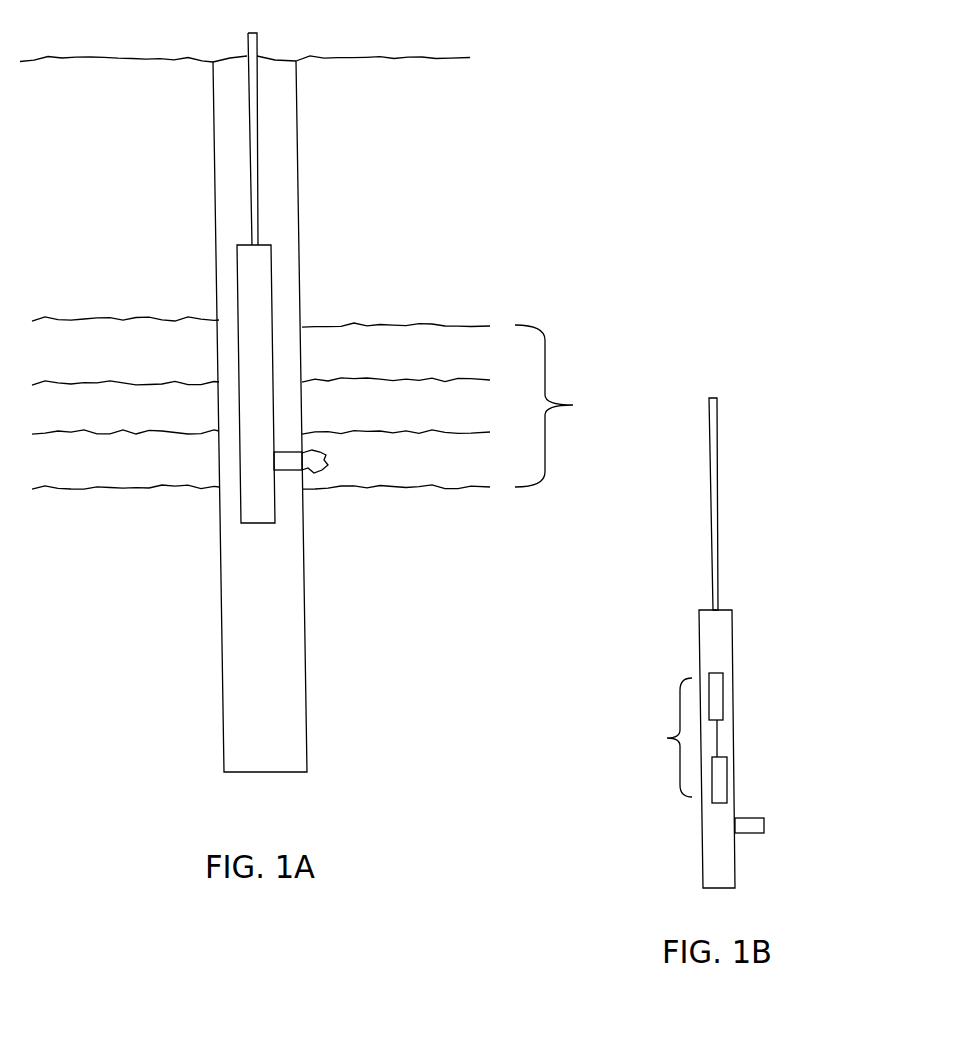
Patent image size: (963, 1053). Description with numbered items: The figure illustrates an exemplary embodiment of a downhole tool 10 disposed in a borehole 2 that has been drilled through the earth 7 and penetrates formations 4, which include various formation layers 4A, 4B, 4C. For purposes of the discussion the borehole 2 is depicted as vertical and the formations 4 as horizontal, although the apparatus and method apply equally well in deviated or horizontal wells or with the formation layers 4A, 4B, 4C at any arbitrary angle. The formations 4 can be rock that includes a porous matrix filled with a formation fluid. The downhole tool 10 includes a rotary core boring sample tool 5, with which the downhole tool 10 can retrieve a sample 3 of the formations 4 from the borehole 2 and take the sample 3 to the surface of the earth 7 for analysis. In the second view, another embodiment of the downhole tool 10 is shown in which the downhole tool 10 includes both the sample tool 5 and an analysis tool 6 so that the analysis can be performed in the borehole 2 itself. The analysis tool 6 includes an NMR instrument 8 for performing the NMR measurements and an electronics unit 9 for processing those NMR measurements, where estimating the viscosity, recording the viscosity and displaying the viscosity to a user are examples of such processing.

In FIG. 1A, the borehole 2 is at (230, 90).
In FIG. 1A, the earth 7 is at (434, 167).
In FIG. 1A, the formations 4 is at (562, 406).
In FIG. 1A, the formation layer 4A is at (446, 367).
In FIG. 1A, the formation layer 4B is at (446, 415).
In FIG. 1A, the formation layer 4C is at (451, 468).
In FIG. 1A, the sample 3 is at (316, 462).
In FIG. 1A, the rotary core boring sample tool 5 is at (285, 462).
In FIG. 1B, the rotary core boring sample tool 5 is at (757, 828).
In FIG. 1A, the downhole tool 10 is at (226, 515).
In FIG. 1B, the downhole tool 10 is at (586, 658).
In FIG. 1B, the electronics unit 9 is at (720, 693).
In FIG. 1B, the NMR instrument 8 is at (722, 782).
In FIG. 1B, the analysis tool 6 is at (675, 737).